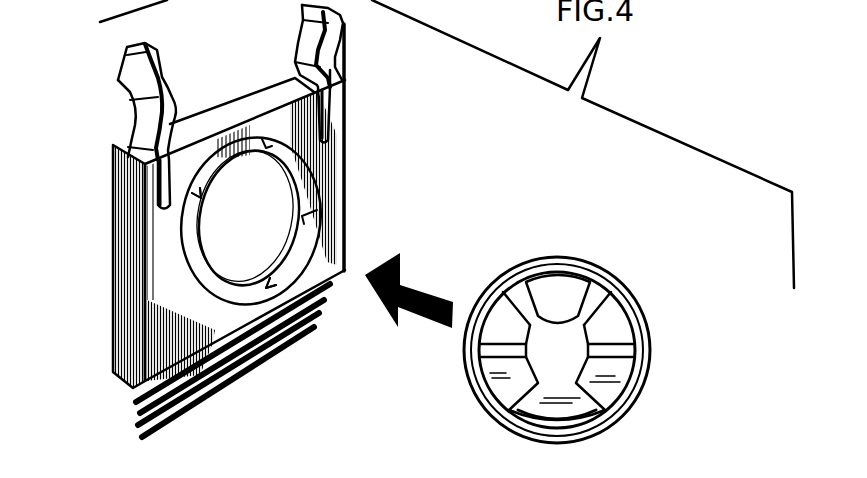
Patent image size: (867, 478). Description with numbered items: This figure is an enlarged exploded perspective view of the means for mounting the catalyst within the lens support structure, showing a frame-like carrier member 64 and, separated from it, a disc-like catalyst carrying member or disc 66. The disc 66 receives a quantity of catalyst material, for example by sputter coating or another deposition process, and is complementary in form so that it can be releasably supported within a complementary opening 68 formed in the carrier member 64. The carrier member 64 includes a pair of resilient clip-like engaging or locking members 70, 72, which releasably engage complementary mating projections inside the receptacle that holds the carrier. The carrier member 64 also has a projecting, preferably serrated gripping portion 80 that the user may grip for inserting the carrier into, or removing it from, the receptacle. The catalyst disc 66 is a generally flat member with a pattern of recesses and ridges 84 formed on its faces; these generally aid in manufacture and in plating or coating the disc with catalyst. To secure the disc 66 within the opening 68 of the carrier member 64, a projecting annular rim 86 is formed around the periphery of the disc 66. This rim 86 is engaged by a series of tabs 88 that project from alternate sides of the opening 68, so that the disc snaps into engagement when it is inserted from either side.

The carrier member 64 is at (100, 261).
The catalyst disc 66 is at (584, 337).
The complementary opening 68 is at (268, 182).
The resilient clip-like engaging member 70 is at (335, 33).
The resilient clip-like engaging member 72 is at (118, 80).
The serrated gripping portion 80 is at (228, 378).
The recesses and ridges 84 is at (590, 335).
The projecting annular rim 86 is at (632, 410).
The tabs 88 is at (263, 253).